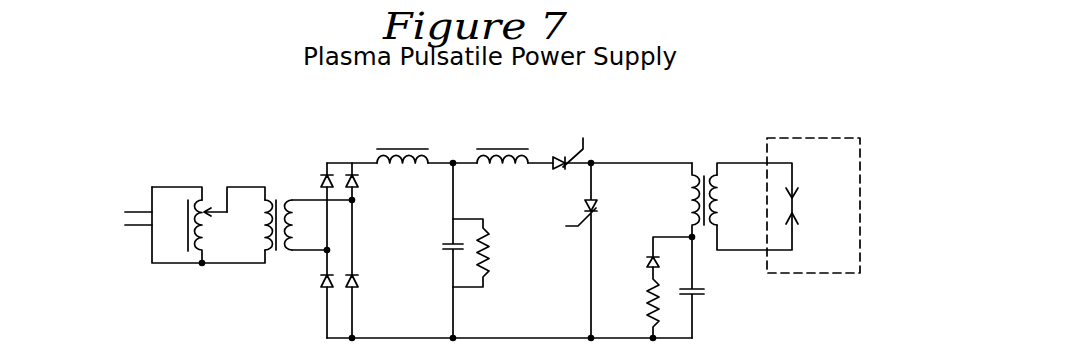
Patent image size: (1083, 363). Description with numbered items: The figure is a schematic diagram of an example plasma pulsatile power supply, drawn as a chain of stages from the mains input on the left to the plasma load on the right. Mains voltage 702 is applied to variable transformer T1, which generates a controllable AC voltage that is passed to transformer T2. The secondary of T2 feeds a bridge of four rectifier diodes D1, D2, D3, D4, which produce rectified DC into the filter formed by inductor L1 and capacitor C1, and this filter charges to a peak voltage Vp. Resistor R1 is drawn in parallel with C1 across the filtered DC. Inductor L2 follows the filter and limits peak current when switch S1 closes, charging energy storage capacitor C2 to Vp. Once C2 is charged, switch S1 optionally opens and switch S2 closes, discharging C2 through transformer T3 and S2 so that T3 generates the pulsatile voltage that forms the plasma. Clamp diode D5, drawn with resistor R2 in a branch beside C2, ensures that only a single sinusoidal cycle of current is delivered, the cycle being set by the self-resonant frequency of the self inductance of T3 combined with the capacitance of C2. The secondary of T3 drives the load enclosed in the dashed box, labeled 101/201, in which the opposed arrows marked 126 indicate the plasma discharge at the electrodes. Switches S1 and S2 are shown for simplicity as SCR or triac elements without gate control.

The mains voltage 702 is at (107, 232).
The plasma treatment device 101 is at (766, 184).
The plasma treatment device 201 is at (813, 205).
The electrodes / plasma discharge gap 126 is at (821, 200).
The variable transformer T1 is at (208, 241).
The transformer T2 is at (310, 247).
The transformer T3 is at (742, 192).
The rectifier diode D1 is at (312, 178).
The rectifier diode D2 is at (370, 187).
The rectifier diode D3 is at (315, 295).
The rectifier diode D4 is at (367, 295).
The clamp diode D5 is at (652, 256).
The filter inductor L1 is at (402, 143).
The inductor L2 is at (502, 143).
The filter capacitor C1 is at (436, 251).
The energy storage capacitor C2 is at (706, 286).
The bleeder resistor R1 is at (489, 253).
The snubber resistor R2 is at (638, 304).
The switch S1 is at (571, 166).
The switch S2 is at (598, 252).